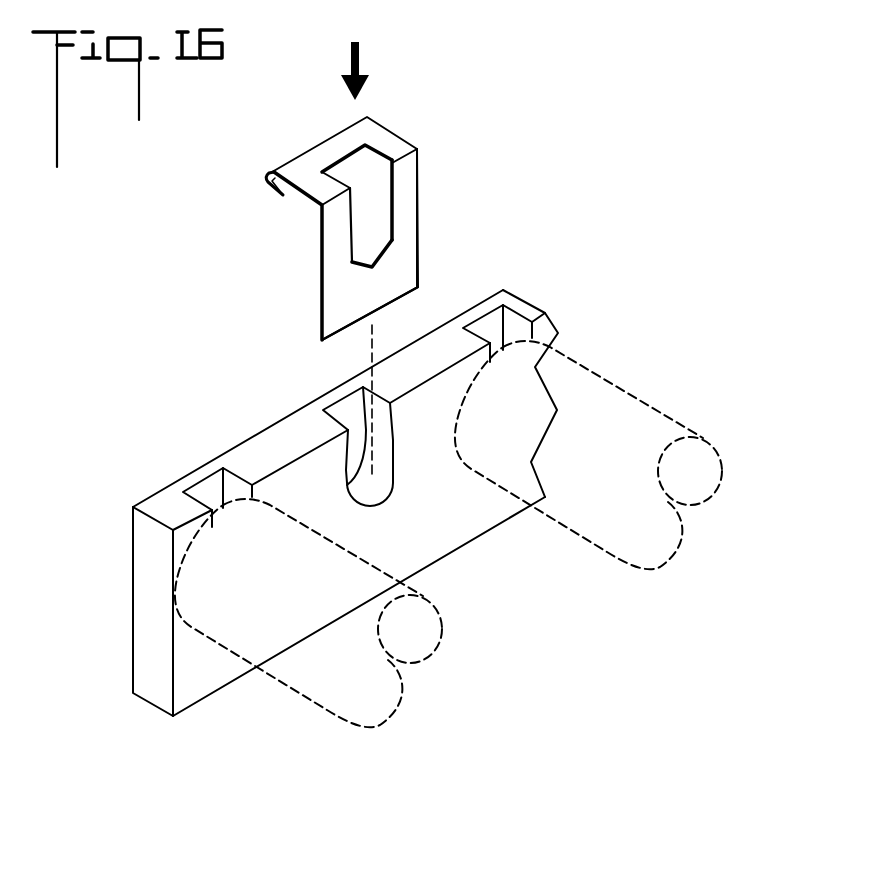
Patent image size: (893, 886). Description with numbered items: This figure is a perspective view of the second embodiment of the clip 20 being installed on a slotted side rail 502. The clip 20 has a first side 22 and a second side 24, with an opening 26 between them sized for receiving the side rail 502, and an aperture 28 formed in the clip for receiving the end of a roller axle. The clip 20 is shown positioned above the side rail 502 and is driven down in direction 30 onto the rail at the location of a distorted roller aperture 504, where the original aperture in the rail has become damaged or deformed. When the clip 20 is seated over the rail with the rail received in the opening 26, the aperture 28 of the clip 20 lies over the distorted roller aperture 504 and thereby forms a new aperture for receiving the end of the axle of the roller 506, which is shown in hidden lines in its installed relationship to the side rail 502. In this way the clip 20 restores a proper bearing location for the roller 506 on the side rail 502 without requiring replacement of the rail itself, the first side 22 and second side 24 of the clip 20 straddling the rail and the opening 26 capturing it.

The clip 20 is at (424, 133).
The first side 22 is at (398, 273).
The second side 24 is at (270, 195).
The opening 26 is at (300, 200).
The aperture 28 is at (360, 222).
The direction 30 is at (360, 63).
The side rail 502 is at (250, 470).
The distorted roller aperture 504 is at (378, 477).
The roller 506 is at (618, 366).